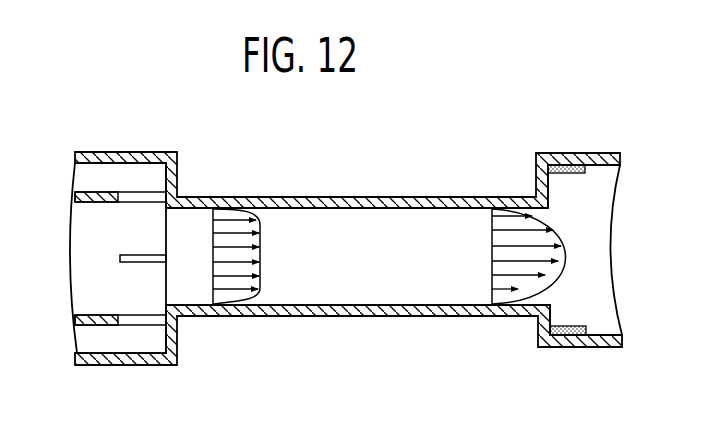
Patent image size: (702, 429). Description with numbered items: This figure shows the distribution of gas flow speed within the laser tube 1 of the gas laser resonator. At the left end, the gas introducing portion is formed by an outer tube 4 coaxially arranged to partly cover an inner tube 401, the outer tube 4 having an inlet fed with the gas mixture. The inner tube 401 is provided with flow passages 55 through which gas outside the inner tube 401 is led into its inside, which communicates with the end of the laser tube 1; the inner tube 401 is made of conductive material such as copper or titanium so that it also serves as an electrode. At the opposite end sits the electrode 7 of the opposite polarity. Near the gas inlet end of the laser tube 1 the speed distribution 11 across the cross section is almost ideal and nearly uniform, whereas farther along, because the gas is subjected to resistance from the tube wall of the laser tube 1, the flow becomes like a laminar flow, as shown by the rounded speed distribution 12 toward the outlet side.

The laser tube 1 is at (302, 198).
The outer tube 4 is at (90, 160).
The inner tube 401 is at (92, 325).
The flow passages 55 is at (152, 255).
The electrode 7 is at (565, 160).
The inlet velocity profile 11 is at (263, 283).
The outlet velocity profile 12 is at (532, 290).